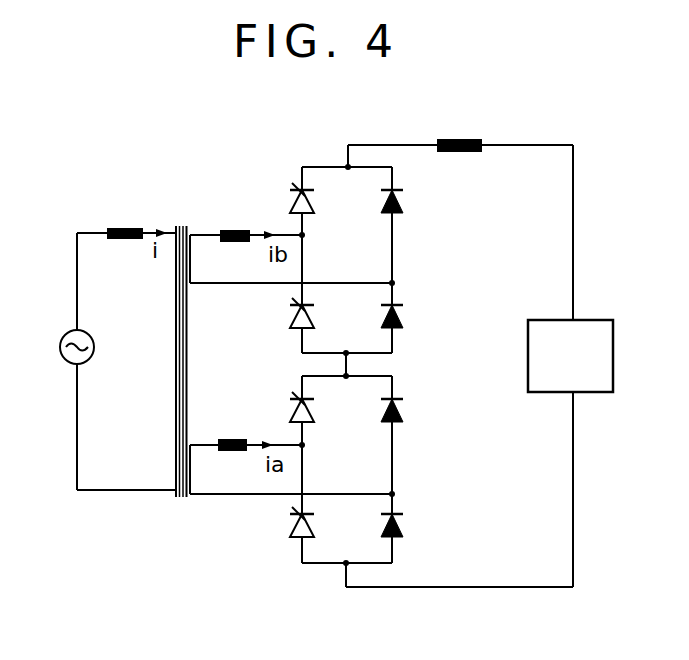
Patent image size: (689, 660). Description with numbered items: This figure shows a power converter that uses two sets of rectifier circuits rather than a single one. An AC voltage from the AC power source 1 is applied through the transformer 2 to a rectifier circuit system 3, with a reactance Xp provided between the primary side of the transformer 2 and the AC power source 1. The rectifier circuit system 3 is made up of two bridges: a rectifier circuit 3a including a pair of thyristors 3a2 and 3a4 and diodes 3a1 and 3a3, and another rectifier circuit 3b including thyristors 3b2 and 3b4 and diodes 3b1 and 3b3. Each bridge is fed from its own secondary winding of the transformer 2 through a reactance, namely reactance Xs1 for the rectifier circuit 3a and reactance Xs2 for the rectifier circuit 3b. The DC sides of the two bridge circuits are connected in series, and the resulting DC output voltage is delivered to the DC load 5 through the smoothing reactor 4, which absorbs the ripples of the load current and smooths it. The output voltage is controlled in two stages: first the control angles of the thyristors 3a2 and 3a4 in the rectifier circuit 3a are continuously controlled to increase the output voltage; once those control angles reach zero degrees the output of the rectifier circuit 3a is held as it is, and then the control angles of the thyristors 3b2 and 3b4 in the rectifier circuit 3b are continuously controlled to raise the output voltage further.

The AC power source 1 is at (64, 337).
The transformer 2 is at (191, 224).
The rectifier circuit system 3 is at (330, 141).
The rectifier circuit 3a is at (435, 487).
The rectifier circuit 3b is at (435, 276).
The diode 3a1 is at (403, 530).
The thyristor 3a2 is at (314, 530).
The diode 3a3 is at (403, 415).
The thyristor 3a4 is at (314, 415).
The diode 3b1 is at (403, 322).
The thyristor 3b2 is at (314, 322).
The diode 3b3 is at (403, 206).
The thyristor 3b4 is at (314, 206).
The smoothing reactor 4 is at (474, 139).
The DC load 5 is at (613, 328).
The reactance Xp is at (122, 228).
The reactance Xs1 is at (223, 439).
The reactance Xs2 is at (230, 230).